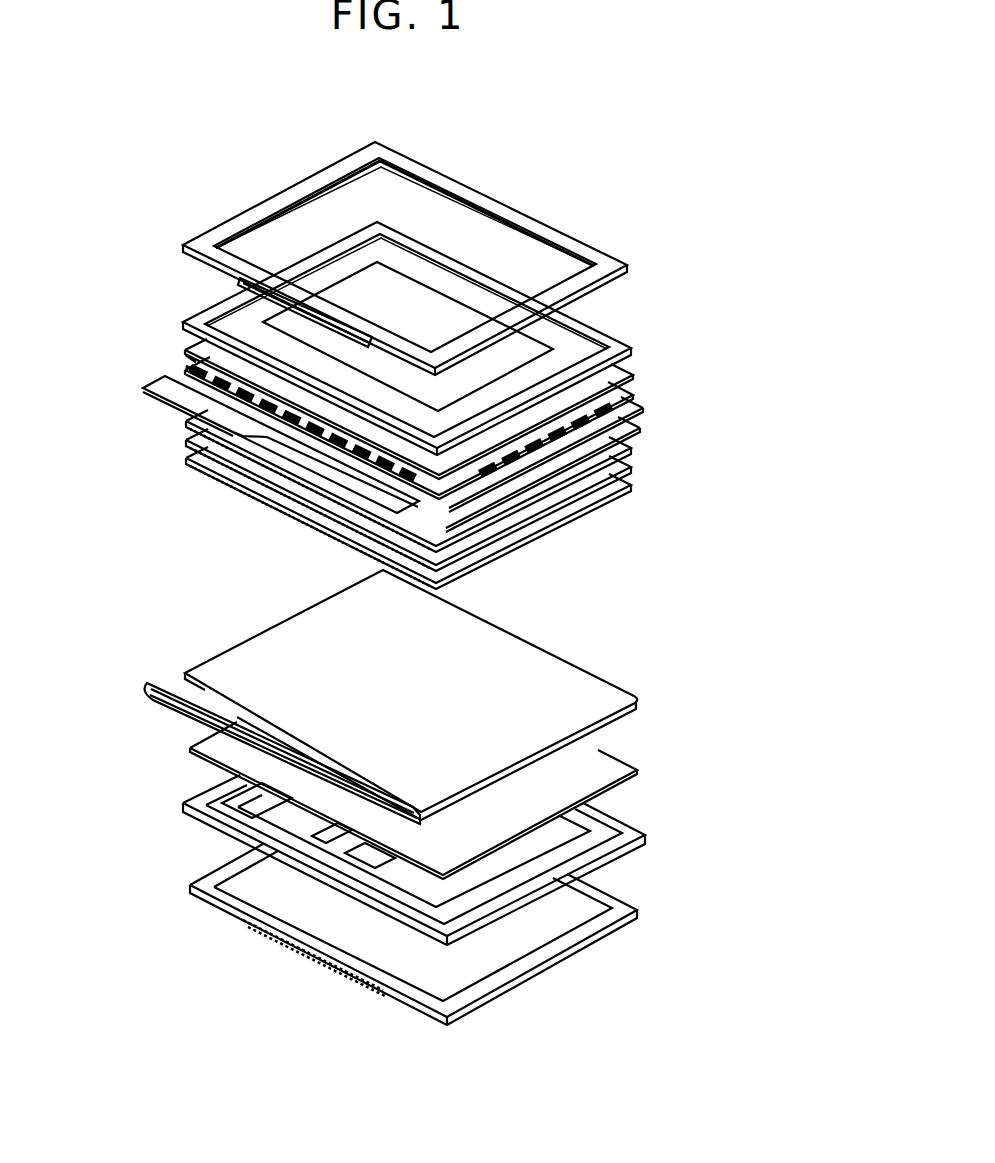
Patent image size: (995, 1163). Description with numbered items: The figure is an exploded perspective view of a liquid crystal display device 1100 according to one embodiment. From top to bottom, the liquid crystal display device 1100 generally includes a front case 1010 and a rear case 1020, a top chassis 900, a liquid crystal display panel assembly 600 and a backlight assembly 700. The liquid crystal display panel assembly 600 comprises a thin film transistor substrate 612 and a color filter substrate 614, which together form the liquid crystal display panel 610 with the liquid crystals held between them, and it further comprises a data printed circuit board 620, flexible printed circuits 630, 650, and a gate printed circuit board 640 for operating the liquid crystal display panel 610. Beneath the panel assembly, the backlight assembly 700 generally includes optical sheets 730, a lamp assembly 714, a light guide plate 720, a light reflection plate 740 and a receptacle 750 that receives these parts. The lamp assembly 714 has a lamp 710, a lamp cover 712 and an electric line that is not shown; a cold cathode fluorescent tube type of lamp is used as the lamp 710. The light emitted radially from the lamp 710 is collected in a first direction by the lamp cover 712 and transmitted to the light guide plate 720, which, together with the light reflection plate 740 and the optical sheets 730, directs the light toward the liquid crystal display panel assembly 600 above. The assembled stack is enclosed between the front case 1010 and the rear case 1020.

The liquid crystal display device 1100 is at (521, 173).
The front case 1010 is at (603, 247).
The rear case 1020 is at (638, 910).
The top chassis 900 is at (222, 288).
The liquid crystal display panel assembly 600 is at (190, 345).
The liquid crystal display panel 610 is at (332, 414).
The thin film transistor substrate 612 is at (607, 403).
The color filter substrate 614 is at (603, 380).
The data printed circuit board 620 is at (150, 395).
The flexible printed circuit 630 is at (187, 357).
The gate printed circuit board 640 is at (587, 435).
The flexible printed circuit 650 is at (607, 415).
The backlight assembly 700 is at (74, 760).
The lamp 710 is at (417, 810).
The lamp cover 712 is at (407, 798).
The lamp assembly 714 is at (467, 722).
The light guide plate 720 is at (607, 705).
The optical sheets 730 is at (177, 418).
The light reflection plate 740 is at (603, 777).
The receptacle 750 is at (210, 770).